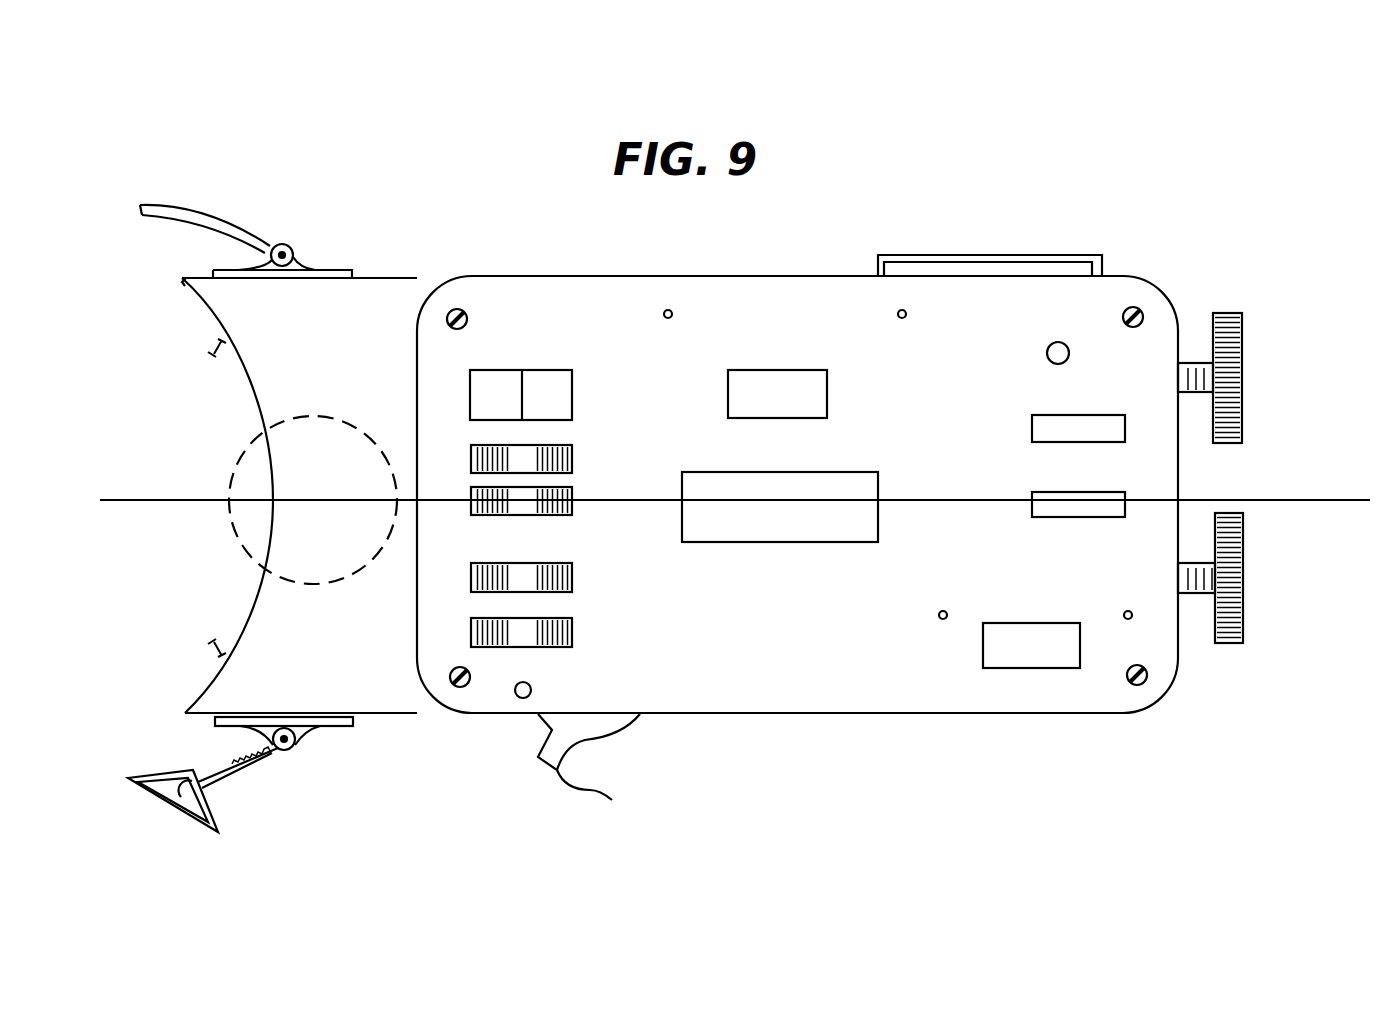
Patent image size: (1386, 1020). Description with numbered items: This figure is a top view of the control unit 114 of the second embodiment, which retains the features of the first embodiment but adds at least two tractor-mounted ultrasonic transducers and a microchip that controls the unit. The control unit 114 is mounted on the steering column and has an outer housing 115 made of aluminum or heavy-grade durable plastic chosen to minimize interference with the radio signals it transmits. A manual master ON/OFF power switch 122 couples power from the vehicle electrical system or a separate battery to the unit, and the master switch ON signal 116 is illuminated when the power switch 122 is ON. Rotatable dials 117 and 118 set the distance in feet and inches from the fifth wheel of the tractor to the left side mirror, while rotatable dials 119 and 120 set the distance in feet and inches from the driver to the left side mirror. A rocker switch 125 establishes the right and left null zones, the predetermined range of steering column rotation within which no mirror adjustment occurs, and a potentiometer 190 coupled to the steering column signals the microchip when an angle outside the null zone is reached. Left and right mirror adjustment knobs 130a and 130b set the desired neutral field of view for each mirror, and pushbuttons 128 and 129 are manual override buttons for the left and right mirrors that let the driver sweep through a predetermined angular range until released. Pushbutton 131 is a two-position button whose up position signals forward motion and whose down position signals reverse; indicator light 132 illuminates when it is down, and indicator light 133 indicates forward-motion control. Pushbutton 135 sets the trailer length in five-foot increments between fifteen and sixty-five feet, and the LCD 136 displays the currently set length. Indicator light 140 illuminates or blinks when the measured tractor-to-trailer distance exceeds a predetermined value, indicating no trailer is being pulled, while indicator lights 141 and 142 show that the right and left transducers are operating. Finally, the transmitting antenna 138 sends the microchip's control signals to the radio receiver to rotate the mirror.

The control unit 114 is at (528, 250).
The outer housing 115 is at (727, 276).
The master switch ON signal 116 is at (518, 697).
The rotatable dial 117 is at (572, 462).
The rotatable dial 118 is at (568, 515).
The rotatable dial 119 is at (572, 578).
The rotatable dial 120 is at (572, 633).
The manual master ON/OFF power switch 122 is at (595, 766).
The rocker switch 125 is at (557, 370).
The pushbutton 128 is at (1032, 428).
The pushbutton 129 is at (1032, 512).
The left mirror adjustment knob 130a is at (1242, 410).
The right mirror adjustment knob 130b is at (1243, 612).
The pushbutton 131 is at (983, 650).
The indicator light 132 is at (1127, 611).
The indicator light 133 is at (941, 611).
The pushbutton 135 is at (795, 370).
The LCD 136 is at (840, 542).
The transmitting antenna 138 is at (1002, 255).
The indicator light 140 is at (1047, 350).
The indicator light 141 is at (671, 317).
The indicator light 142 is at (905, 317).
The potentiometer 190 is at (232, 527).